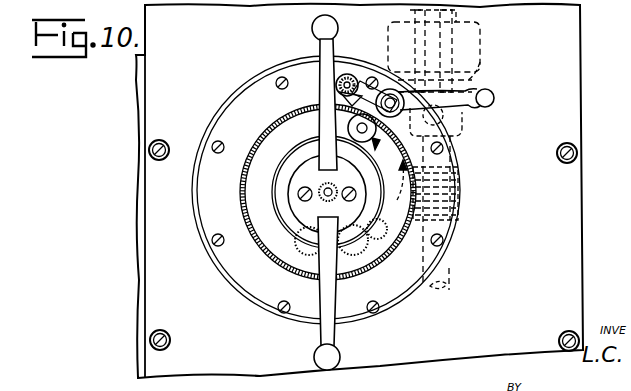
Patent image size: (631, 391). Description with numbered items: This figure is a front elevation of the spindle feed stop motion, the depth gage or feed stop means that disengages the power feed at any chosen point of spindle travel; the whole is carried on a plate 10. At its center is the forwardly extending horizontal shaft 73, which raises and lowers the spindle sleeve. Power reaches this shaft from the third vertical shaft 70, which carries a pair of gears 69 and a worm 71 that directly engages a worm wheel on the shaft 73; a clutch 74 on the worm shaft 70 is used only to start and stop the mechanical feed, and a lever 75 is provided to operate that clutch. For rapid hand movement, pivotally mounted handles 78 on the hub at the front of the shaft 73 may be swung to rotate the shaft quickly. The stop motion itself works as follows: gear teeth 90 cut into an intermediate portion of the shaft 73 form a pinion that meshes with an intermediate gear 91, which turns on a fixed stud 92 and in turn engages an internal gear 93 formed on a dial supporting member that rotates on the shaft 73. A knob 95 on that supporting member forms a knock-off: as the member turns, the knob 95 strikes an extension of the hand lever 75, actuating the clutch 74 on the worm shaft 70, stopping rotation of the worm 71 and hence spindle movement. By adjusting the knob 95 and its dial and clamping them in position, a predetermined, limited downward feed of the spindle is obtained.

The mounting plate 10 is at (560, 66).
The gears 69 is at (482, 62).
The third vertical shaft 70 is at (445, 274).
The worm 71 is at (460, 192).
The forwardly extending shaft 73 is at (305, 208).
The clutch 74 is at (470, 130).
The lever 75 is at (494, 105).
The handles 78 is at (320, 43).
The gear teeth 90 is at (322, 186).
The intermediate gear 91 is at (304, 246).
The fixed stud 92 is at (355, 244).
The internal gear 93 is at (371, 223).
The knob 95 is at (375, 150).